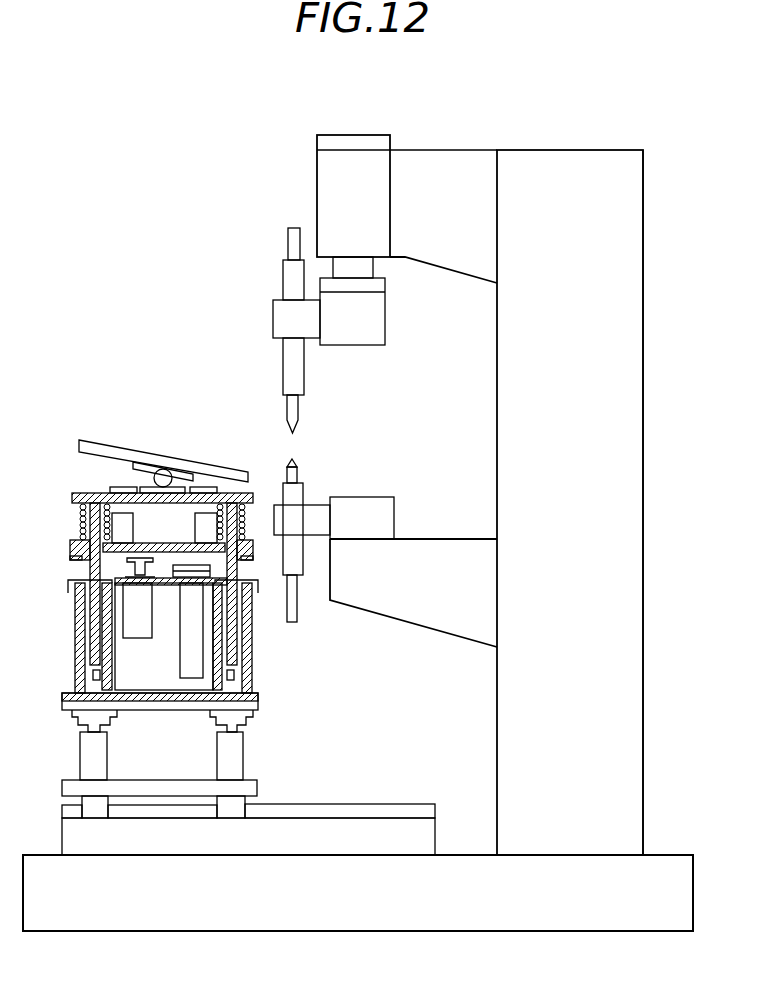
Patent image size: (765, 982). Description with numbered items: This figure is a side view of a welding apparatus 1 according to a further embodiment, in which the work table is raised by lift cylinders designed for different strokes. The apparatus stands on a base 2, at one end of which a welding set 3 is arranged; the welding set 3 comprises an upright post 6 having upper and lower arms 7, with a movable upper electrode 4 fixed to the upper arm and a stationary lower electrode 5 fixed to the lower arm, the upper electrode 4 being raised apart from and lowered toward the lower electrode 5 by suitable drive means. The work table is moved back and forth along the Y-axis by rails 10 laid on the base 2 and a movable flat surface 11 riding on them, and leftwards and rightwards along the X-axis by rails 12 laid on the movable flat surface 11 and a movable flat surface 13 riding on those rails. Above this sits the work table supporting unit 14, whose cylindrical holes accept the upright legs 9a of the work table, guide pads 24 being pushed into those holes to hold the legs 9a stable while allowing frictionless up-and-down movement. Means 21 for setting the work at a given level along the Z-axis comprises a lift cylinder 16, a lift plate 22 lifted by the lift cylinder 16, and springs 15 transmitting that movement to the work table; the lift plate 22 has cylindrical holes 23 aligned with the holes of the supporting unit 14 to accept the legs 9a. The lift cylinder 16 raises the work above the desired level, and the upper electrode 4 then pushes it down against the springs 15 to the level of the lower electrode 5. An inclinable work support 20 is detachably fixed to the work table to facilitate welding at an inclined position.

The welding apparatus 1 is at (230, 318).
The base 2 is at (650, 855).
The welding set 3 is at (656, 290).
The upper electrode 4 is at (295, 412).
The lower electrode 5 is at (298, 471).
The upright post 6 is at (635, 367).
The arms 7 is at (458, 262).
The legs 9a is at (92, 568).
The rails 10 is at (402, 812).
The movable flat surface 11 is at (258, 786).
The rails 12 is at (248, 746).
The movable flat surface 13 is at (258, 704).
The work table supporting unit 14 is at (251, 660).
The springs 15 is at (82, 517).
The lift cylinder 16 is at (183, 648).
The work support 20 is at (157, 458).
The means for setting a work at a given level 21 is at (53, 494).
The lift plate 22 is at (75, 548).
The cylindrical holes 23 is at (80, 557).
The guide pads 24 is at (123, 495).